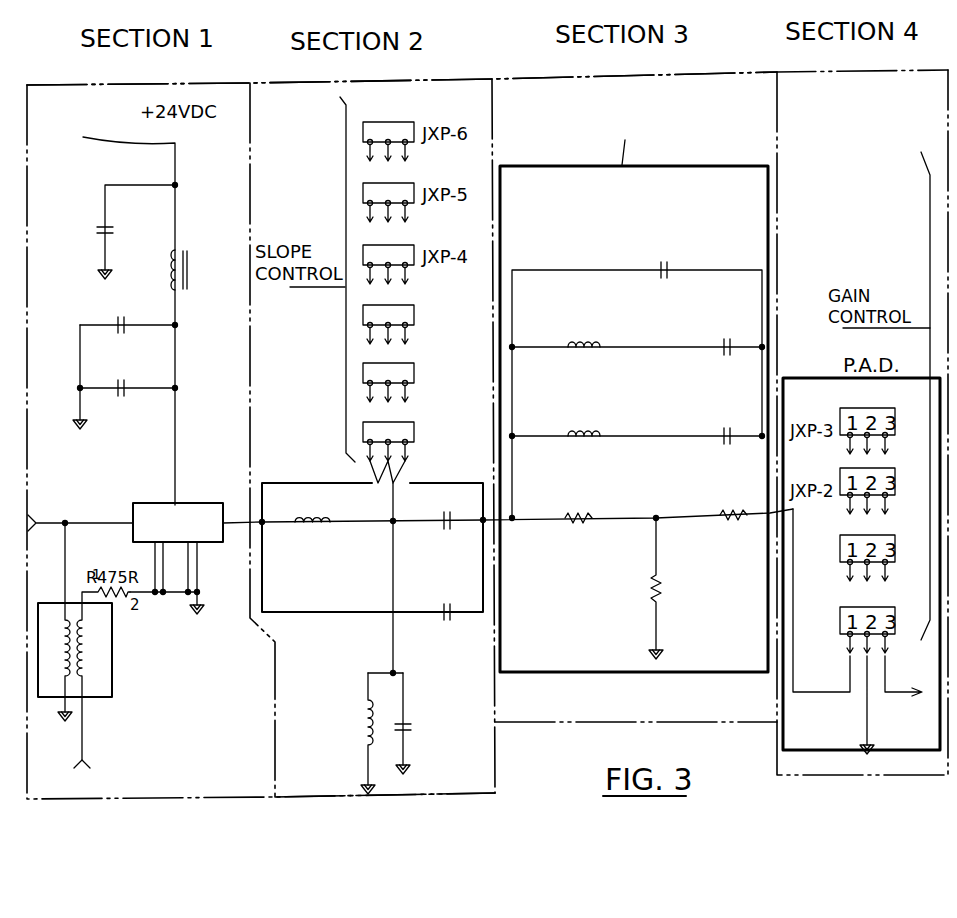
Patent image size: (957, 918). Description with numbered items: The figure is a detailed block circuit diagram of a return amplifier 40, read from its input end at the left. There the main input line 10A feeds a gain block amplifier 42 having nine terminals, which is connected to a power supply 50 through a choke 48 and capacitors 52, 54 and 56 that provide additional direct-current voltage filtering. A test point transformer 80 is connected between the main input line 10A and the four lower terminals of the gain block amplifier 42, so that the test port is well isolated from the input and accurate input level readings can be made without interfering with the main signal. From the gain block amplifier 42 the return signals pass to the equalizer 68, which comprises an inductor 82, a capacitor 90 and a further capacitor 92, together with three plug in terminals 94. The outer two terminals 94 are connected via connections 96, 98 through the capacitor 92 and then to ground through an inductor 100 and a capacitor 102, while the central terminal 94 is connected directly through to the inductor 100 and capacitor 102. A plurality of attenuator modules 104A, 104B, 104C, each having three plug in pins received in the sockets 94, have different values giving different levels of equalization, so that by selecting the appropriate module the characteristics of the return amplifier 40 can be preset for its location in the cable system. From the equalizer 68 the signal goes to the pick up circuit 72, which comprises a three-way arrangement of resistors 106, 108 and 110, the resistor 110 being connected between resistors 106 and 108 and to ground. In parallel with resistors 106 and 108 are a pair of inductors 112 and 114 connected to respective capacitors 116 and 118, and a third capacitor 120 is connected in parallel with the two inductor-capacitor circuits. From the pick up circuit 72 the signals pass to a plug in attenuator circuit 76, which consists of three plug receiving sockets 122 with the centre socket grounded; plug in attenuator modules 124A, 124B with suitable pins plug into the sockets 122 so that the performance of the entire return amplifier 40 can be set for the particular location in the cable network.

The return amplifier 40 is at (503, 60).
The power supply 50 is at (112, 316).
The capacitor 52 is at (104, 226).
The capacitor 54 is at (116, 324).
The capacitor 56 is at (120, 396).
The choke 48 is at (192, 258).
The main input line 10A is at (58, 522).
The gain block amplifier 42 is at (224, 545).
The test point transformer 80 is at (112, 680).
The inductor 82 is at (292, 482).
The plug in terminals 94 is at (389, 489).
The connection 96 is at (262, 585).
The capacitor 90 is at (433, 500).
The connection 98 is at (483, 563).
The further capacitor 92 is at (432, 618).
The inductor 100 is at (367, 720).
The capacitor 102 is at (406, 722).
The equalizer 68 is at (330, 795).
The attenuator module 104A is at (410, 422).
The attenuator module 104B is at (410, 363).
The attenuator module 104C is at (410, 304).
The pick up circuit 72 is at (613, 672).
The third capacitor 120 is at (661, 268).
The inductor 114 is at (568, 340).
The capacitor 118 is at (722, 340).
The inductor 112 is at (570, 430).
The capacitor 116 is at (722, 432).
The resistor 106 is at (568, 520).
The resistor 108 is at (722, 518).
The resistor 110 is at (652, 588).
The plug in attenuator circuit 76 is at (812, 378).
The plug in attenuator module 124A is at (840, 616).
The plug in attenuator module 124B is at (880, 535).
The plug receiving sockets 122 is at (852, 720).